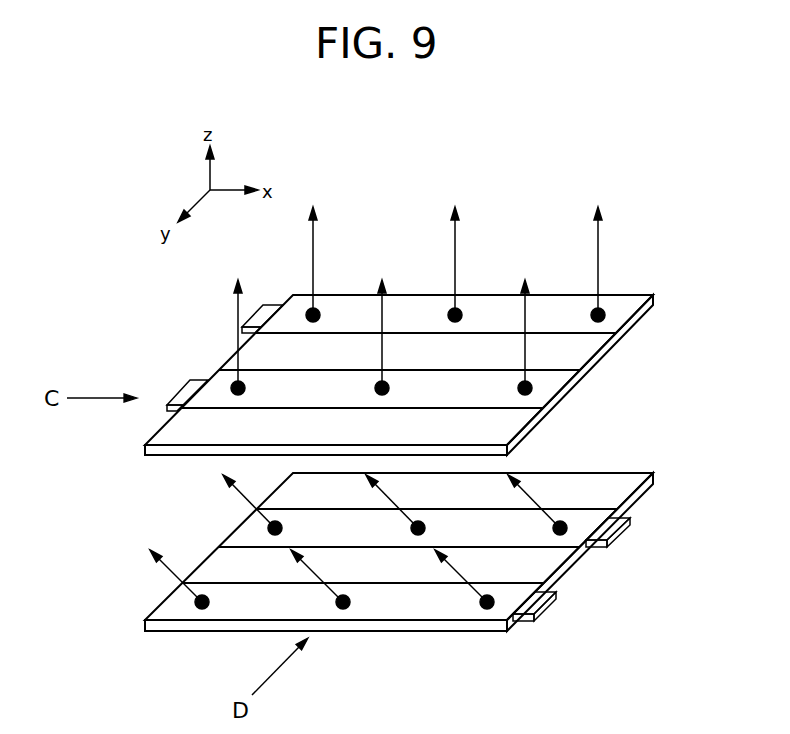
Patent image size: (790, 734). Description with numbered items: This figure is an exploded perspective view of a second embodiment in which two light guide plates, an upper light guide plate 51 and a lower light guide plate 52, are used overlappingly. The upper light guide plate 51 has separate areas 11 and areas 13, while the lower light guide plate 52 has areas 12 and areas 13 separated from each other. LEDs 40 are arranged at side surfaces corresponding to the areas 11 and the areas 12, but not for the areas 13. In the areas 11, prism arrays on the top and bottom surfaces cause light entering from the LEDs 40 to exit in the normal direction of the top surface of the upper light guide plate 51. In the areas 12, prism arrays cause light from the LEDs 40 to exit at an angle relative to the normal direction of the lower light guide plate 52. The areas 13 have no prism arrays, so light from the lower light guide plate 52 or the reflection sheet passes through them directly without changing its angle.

The area 11 is at (500, 313).
The area 12 is at (585, 522).
The area 13 is at (562, 353).
The LED 40 is at (268, 303).
The upper light guide plate 51 is at (580, 181).
The lower light guide plate 52 is at (685, 412).